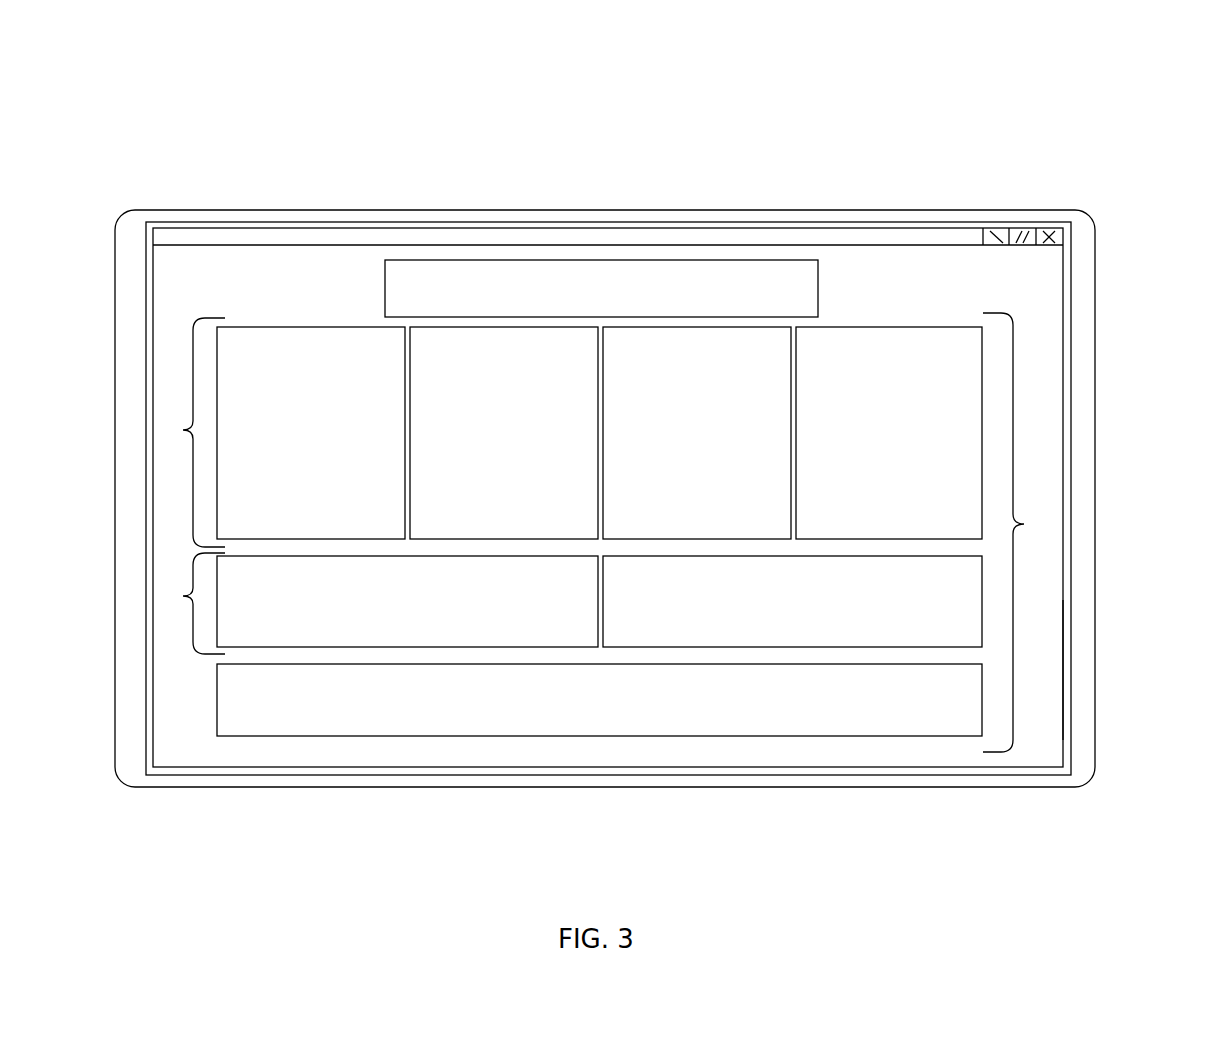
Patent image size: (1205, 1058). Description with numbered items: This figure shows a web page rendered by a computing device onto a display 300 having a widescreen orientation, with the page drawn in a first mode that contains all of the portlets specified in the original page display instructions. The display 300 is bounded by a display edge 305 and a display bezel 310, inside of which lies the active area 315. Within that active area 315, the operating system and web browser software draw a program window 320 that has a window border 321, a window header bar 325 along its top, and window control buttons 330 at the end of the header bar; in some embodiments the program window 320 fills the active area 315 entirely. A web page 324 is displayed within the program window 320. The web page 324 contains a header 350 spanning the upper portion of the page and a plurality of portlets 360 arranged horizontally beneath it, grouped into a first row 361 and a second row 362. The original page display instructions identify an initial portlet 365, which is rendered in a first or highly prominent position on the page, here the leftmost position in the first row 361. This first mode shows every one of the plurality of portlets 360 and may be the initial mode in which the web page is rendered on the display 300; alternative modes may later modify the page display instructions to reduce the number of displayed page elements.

The display 300 is at (959, 111).
The display edge 305 is at (266, 210).
The display bezel 310 is at (135, 362).
The active area 315 is at (177, 653).
The programming window 320 is at (1089, 399).
The window border 321 is at (1068, 664).
The web page 324 is at (966, 306).
The window header bar 325 is at (823, 237).
The window control buttons 330 is at (988, 233).
The header 350 is at (620, 300).
The plurality of portlets 360 is at (1051, 527).
The first row 361 is at (167, 433).
The second row 362 is at (167, 604).
The initial portlet 365 is at (331, 443).